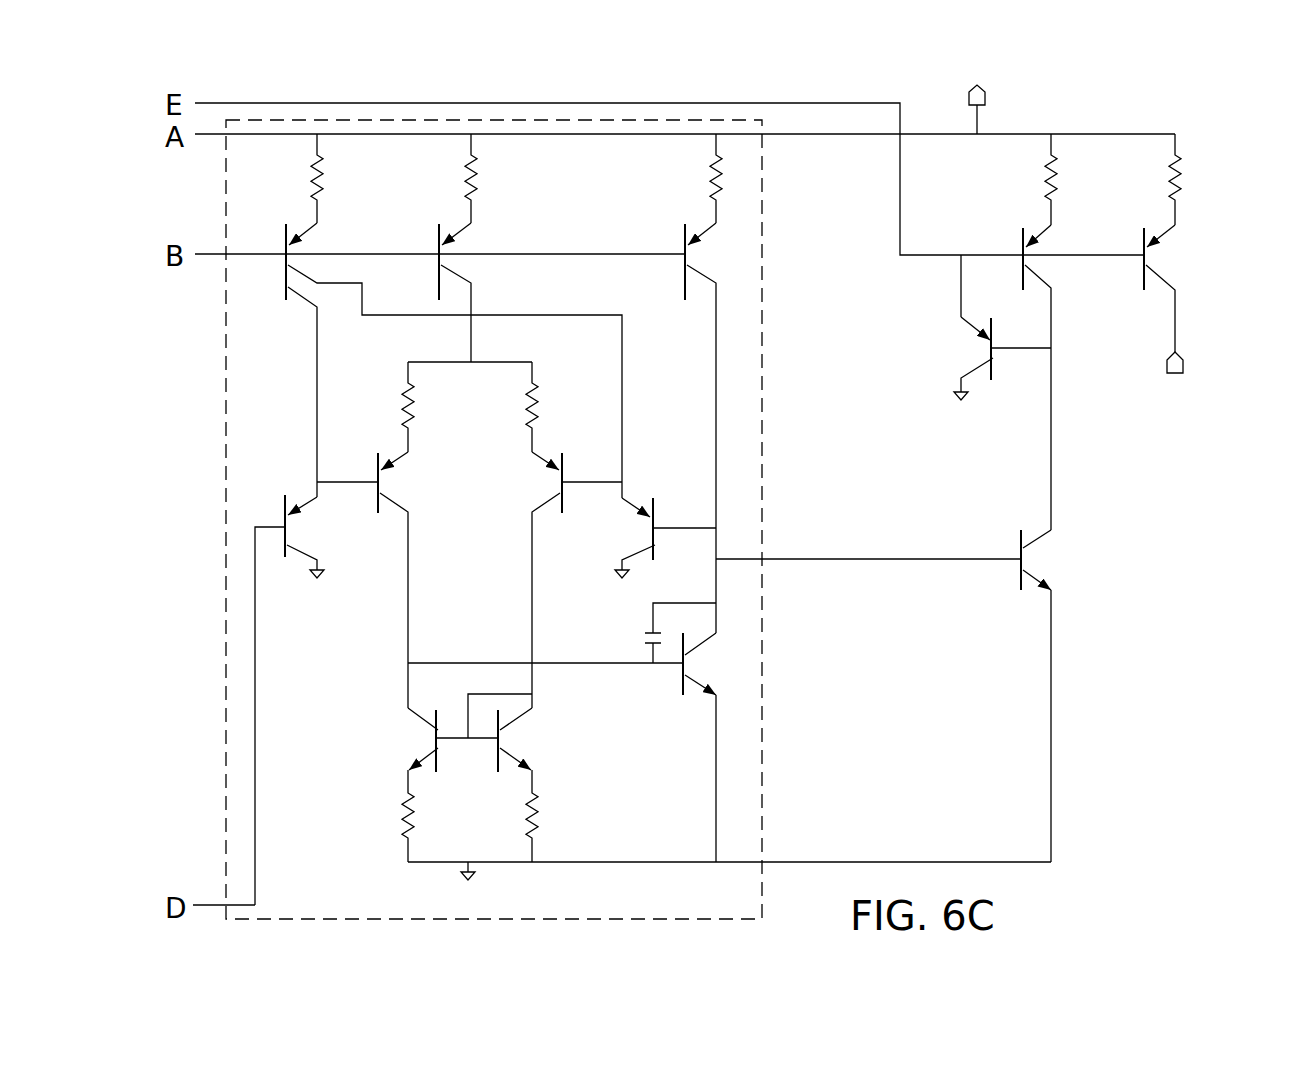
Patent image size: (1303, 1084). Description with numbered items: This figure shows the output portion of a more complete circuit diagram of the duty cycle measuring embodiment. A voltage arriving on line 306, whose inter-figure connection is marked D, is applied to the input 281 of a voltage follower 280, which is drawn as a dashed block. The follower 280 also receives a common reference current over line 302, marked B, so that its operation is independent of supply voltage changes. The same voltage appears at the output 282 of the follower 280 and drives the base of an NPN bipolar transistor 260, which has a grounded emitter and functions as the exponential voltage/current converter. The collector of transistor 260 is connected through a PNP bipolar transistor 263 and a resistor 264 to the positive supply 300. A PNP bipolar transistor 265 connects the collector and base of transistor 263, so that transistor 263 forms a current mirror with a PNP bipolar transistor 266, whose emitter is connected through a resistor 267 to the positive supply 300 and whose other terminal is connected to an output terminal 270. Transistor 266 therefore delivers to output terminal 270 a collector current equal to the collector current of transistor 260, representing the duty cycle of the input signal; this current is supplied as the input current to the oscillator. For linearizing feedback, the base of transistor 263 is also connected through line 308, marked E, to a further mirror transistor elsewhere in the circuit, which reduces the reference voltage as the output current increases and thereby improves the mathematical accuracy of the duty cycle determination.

The NPN bipolar transistor 260 is at (1030, 565).
The PNP bipolar transistor 263 is at (1012, 248).
The resistor 264 is at (1047, 190).
The PNP bipolar transistor 265 is at (975, 347).
The PNP bipolar transistor 266 is at (1163, 260).
The resistor 267 is at (1170, 190).
The output terminal 270 is at (1190, 365).
The voltage follower 280 is at (218, 467).
The input 281 is at (255, 648).
The output 282 is at (727, 557).
The positive supply 300 is at (988, 83).
The line 302 is at (609, 254).
The line 306 is at (210, 903).
The line 308 is at (900, 230).